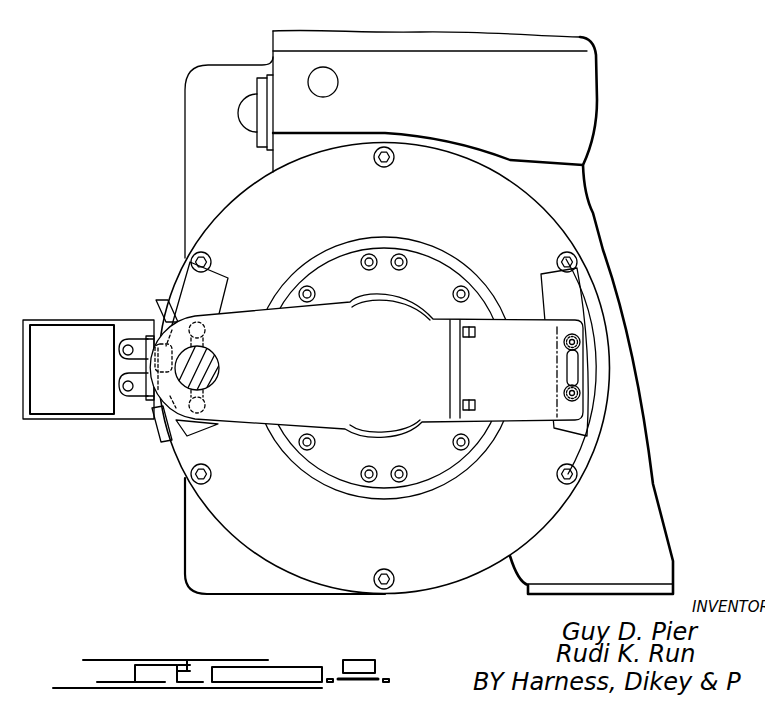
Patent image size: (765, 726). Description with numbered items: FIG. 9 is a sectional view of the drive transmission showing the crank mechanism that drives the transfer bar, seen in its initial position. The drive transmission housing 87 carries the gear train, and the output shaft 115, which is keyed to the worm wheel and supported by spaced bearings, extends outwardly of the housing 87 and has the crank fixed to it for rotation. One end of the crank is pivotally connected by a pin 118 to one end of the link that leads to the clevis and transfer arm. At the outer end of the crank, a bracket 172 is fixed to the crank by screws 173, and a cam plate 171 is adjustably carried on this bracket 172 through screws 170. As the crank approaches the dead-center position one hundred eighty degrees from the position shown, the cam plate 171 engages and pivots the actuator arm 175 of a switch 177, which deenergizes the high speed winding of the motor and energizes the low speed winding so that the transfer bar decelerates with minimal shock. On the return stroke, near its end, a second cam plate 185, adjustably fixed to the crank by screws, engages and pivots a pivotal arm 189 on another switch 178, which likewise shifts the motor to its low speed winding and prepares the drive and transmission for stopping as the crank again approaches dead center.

The drive transmission housing 87 is at (178, 152).
The output shaft 115 is at (323, 313).
The pin 118 is at (219, 368).
The screws 170 is at (582, 395).
The cam plate 171 is at (583, 430).
The bracket 172 is at (538, 407).
The screws 173 is at (470, 340).
The actuator arm 175 is at (143, 337).
The switch 177 is at (124, 335).
The switch 178 is at (142, 404).
The cam plate 185 is at (217, 278).
The pivotal arm 189 is at (160, 428).